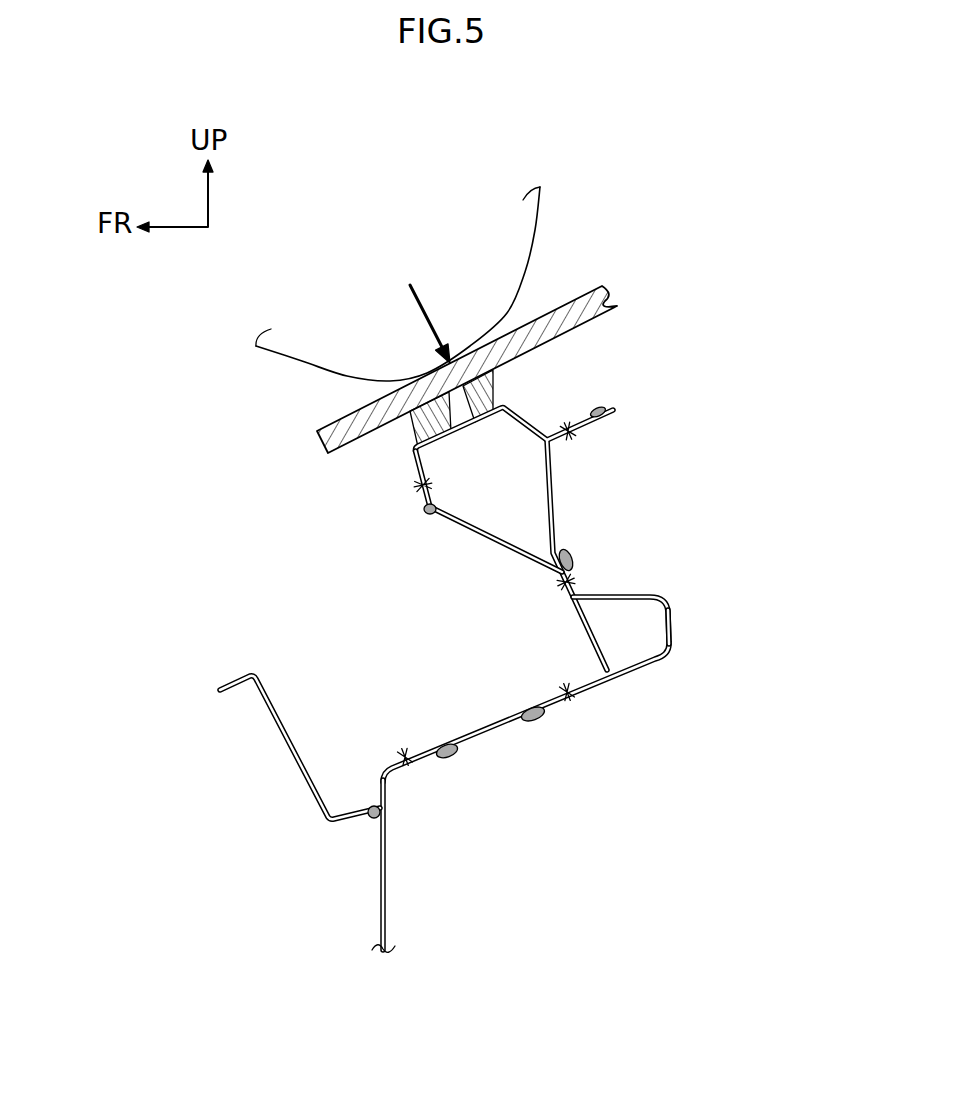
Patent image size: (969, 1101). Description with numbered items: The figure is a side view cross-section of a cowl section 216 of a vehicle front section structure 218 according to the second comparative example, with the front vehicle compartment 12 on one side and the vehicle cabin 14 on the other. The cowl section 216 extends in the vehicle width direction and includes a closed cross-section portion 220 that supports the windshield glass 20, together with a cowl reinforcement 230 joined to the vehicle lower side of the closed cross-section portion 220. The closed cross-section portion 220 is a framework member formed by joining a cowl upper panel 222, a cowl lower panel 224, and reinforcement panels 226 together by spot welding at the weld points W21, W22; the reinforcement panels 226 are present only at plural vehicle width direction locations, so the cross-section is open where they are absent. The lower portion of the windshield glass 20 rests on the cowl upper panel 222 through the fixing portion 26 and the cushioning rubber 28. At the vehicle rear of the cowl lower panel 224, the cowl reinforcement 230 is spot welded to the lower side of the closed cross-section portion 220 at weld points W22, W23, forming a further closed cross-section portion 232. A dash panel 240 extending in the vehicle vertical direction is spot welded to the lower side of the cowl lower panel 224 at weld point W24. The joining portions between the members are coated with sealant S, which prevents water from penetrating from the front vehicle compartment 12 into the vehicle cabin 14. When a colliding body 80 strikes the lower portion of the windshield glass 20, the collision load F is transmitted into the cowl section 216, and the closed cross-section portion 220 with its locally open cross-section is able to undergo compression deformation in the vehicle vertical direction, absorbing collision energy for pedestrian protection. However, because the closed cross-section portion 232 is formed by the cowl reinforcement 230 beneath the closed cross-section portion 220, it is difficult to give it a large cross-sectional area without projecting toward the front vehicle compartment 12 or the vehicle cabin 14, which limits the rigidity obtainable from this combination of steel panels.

The front vehicle compartment 12 is at (206, 872).
The vehicle cabin 14 is at (804, 816).
The windshield glass 20 is at (573, 300).
The fixing portion 26 is at (406, 426).
The cushioning rubber 28 is at (497, 400).
The colliding body 80 is at (293, 363).
The collision load F is at (432, 317).
The cowl section 216 is at (723, 334).
The vehicle front section structure 218 is at (694, 221).
The closed cross-section portion 220 is at (402, 466).
The cowl upper panel 222 is at (530, 427).
The cowl lower panel 224 is at (283, 731).
The reinforcement panel 226 is at (490, 540).
The cowl reinforcement 230 is at (662, 598).
The closed cross-section portion 232 is at (672, 615).
The dash panel 240 is at (387, 889).
The sealant S is at (605, 410).
The weld point W21 is at (424, 489).
The weld point W22 is at (555, 590).
The weld point W23 is at (572, 697).
The weld point W24 is at (411, 755).